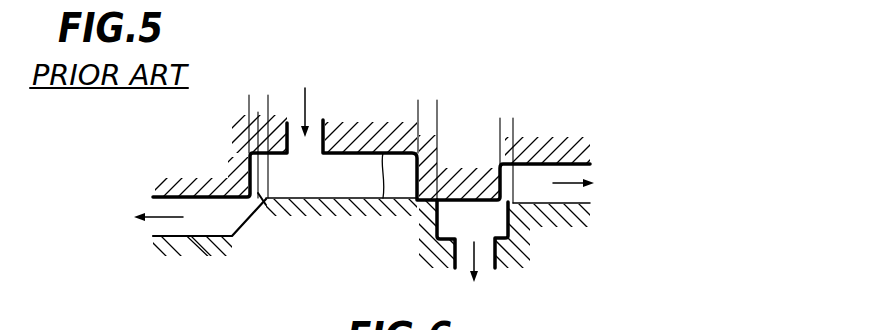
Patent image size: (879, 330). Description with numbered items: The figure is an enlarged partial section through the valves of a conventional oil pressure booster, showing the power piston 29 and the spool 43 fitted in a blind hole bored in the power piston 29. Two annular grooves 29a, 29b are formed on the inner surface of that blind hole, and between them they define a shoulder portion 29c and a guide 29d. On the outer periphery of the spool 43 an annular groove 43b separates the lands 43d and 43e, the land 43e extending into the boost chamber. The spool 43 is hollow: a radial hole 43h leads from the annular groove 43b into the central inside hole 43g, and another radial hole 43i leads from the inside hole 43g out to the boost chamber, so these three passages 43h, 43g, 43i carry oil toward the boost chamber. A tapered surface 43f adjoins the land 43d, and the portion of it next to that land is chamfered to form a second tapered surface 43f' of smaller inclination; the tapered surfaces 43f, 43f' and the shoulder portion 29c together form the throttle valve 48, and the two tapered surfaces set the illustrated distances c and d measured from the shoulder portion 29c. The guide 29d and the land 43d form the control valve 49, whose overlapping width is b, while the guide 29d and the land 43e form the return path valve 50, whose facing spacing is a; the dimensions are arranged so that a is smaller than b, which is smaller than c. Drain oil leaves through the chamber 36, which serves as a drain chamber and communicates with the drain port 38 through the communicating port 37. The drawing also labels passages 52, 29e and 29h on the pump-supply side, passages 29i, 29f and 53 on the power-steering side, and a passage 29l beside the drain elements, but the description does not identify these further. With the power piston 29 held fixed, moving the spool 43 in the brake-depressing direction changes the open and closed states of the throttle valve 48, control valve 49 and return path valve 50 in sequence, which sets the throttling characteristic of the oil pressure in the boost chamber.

The power piston 29 is at (572, 152).
The annular groove 29a is at (350, 201).
The annular groove 29b is at (537, 160).
The shoulder portion 29c is at (238, 186).
The guide 29d is at (449, 200).
The pump supply passage 29e is at (317, 131).
The drain passage 29h is at (660, 157).
The power steering port 29i is at (98, 234).
The power steering passage 29f is at (83, 257).
The drain passage 29l is at (676, 142).
The chamber 36 is at (676, 142).
The communicating port 37 is at (676, 142).
The drain port 38 is at (585, 168).
The spool 43 is at (212, 240).
The annular groove 43b is at (512, 240).
The land 43d is at (347, 198).
The land 43e is at (572, 203).
The tapered surface 43f is at (218, 221).
The tapered surface 43f' is at (298, 175).
The radial hole 43h is at (433, 263).
The inside hole 43g is at (433, 263).
The radial hole 43i is at (455, 253).
The throttle valve 48 is at (263, 204).
The control valve 49 is at (424, 211).
The return path valve 50 is at (518, 214).
The pump supply passage 52 is at (366, 97).
The power steering passage 53 is at (153, 236).
The spacing a is at (533, 127).
The overlapping width b is at (456, 113).
The distance c is at (290, 103).
The distance d is at (290, 117).